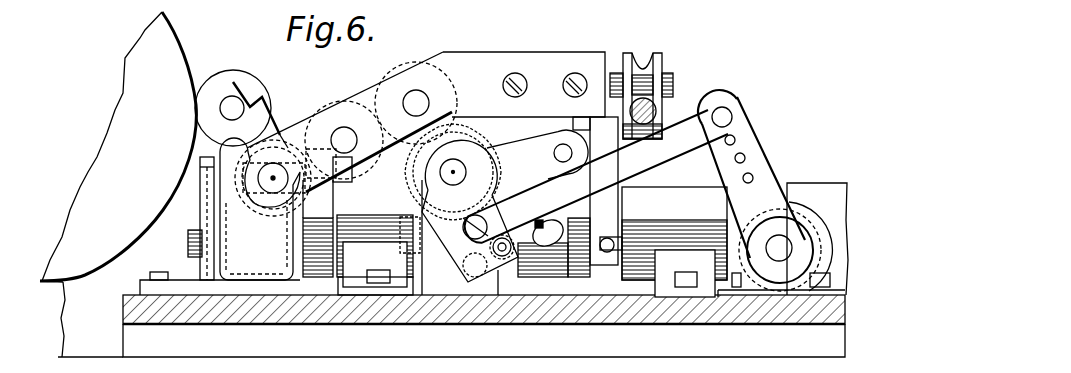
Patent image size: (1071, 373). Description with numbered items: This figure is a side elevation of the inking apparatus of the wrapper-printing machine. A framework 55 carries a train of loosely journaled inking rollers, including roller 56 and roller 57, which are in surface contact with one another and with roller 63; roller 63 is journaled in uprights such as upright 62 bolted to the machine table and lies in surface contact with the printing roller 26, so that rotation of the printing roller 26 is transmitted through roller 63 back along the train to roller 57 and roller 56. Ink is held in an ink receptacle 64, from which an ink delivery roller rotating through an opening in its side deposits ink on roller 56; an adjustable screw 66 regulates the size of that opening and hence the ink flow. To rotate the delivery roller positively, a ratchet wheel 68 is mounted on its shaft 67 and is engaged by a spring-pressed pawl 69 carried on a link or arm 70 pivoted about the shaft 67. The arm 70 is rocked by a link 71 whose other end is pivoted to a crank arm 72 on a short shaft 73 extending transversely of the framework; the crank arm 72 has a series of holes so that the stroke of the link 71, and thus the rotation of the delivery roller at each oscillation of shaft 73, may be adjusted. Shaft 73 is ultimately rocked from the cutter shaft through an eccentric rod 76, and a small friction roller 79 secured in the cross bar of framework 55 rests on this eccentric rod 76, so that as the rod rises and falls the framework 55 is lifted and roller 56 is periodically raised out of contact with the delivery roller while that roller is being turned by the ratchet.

The printing roller 26 is at (172, 53).
The framework 55 is at (524, 84).
The roller 56 is at (403, 68).
The roller 57 is at (330, 101).
The upright 62 is at (265, 207).
The roller 63 is at (234, 82).
The ink receptacle 64 is at (537, 154).
The adjustable screw 66 is at (546, 252).
The shaft 67 is at (441, 175).
The ratchet wheel 68 is at (472, 144).
The spring-pressed pawl 69 is at (478, 240).
The link or arm 70 is at (460, 242).
The link 71 is at (596, 176).
The crank arm 72 is at (750, 146).
The short shaft 73 is at (779, 246).
The eccentric rod 76 is at (658, 108).
The friction roller 79 is at (663, 73).